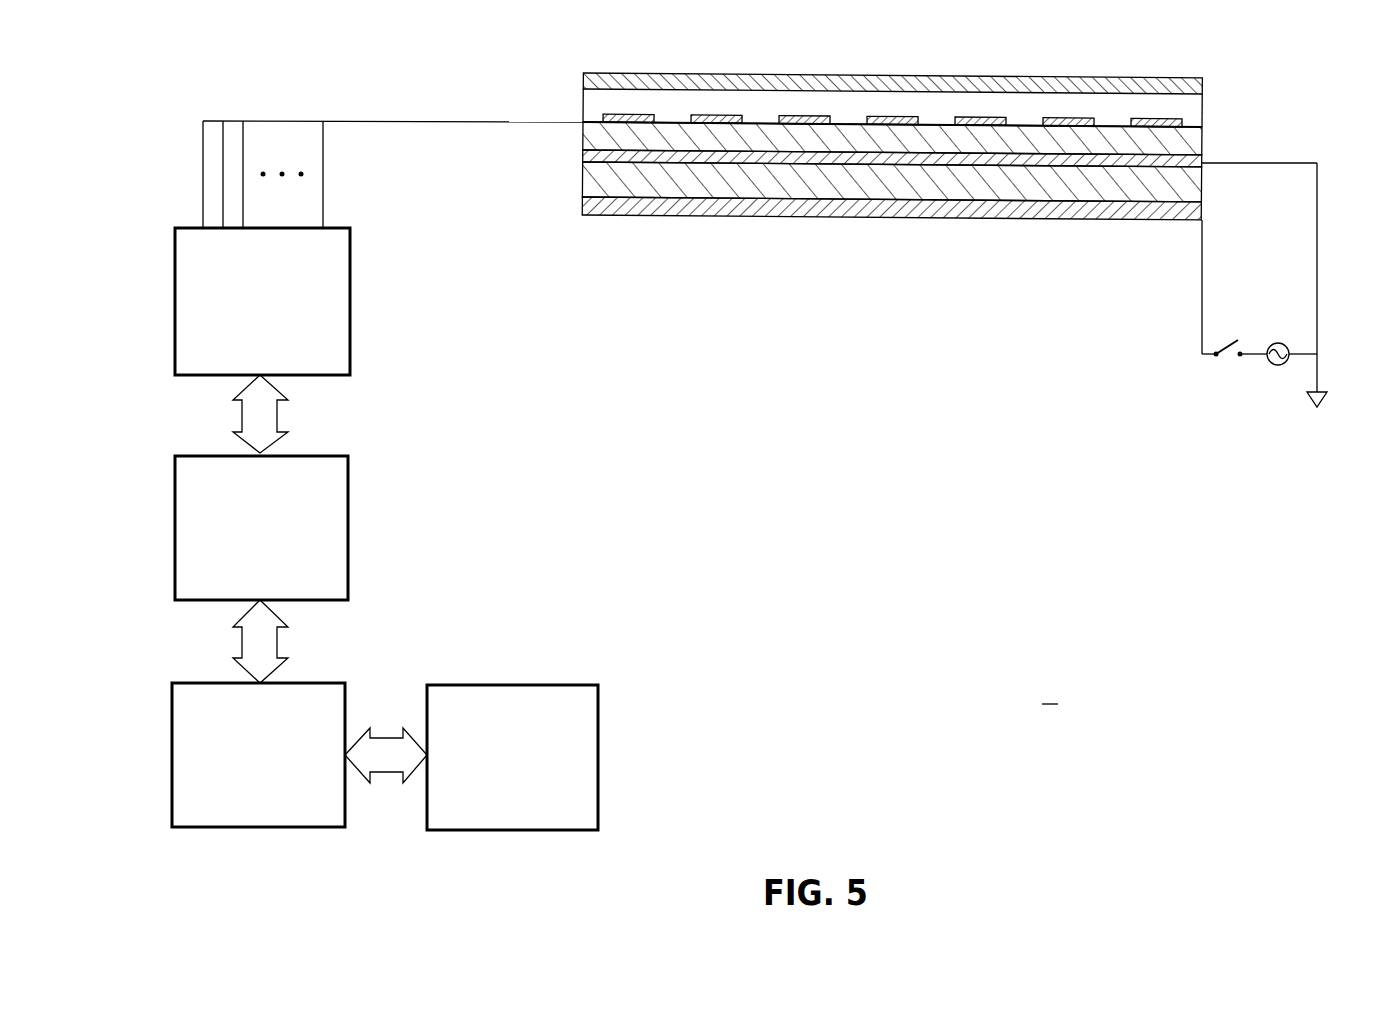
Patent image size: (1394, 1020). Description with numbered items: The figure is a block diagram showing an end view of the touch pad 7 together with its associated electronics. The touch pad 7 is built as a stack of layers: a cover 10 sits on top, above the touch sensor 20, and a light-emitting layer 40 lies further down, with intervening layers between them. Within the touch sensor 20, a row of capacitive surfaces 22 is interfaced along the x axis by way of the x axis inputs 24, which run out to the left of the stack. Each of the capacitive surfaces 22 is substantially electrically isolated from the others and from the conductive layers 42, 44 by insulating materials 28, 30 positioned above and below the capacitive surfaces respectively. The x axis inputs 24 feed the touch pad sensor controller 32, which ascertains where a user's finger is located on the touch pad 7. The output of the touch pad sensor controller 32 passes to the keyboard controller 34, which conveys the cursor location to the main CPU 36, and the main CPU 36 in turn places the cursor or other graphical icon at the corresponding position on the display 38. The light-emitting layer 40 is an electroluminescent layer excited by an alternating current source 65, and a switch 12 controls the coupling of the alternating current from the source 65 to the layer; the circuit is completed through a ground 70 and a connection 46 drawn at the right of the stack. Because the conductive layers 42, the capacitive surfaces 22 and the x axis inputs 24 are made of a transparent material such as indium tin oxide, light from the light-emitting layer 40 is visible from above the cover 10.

The touch pad 7 is at (1050, 692).
The cover 10 is at (566, 60).
The switch 12 is at (1228, 363).
The touch sensor 20 is at (1205, 128).
The capacitive surfaces 22 is at (613, 113).
The "x" axis inputs 24 is at (596, 126).
The insulating material 28 is at (935, 103).
The insulating material 30 is at (585, 143).
The touch pad sensor controller 32 is at (303, 364).
The keyboard controller 34 is at (301, 591).
The main CPU 36 is at (301, 816).
The display 38 is at (553, 817).
The light-emitting layer 40 is at (585, 178).
The conductive layer 42 is at (1205, 165).
The conductive layer 44 is at (585, 210).
The rear electrode lead 46 is at (1195, 192).
The alternating current source 65 is at (1287, 346).
The ground 70 is at (1322, 392).